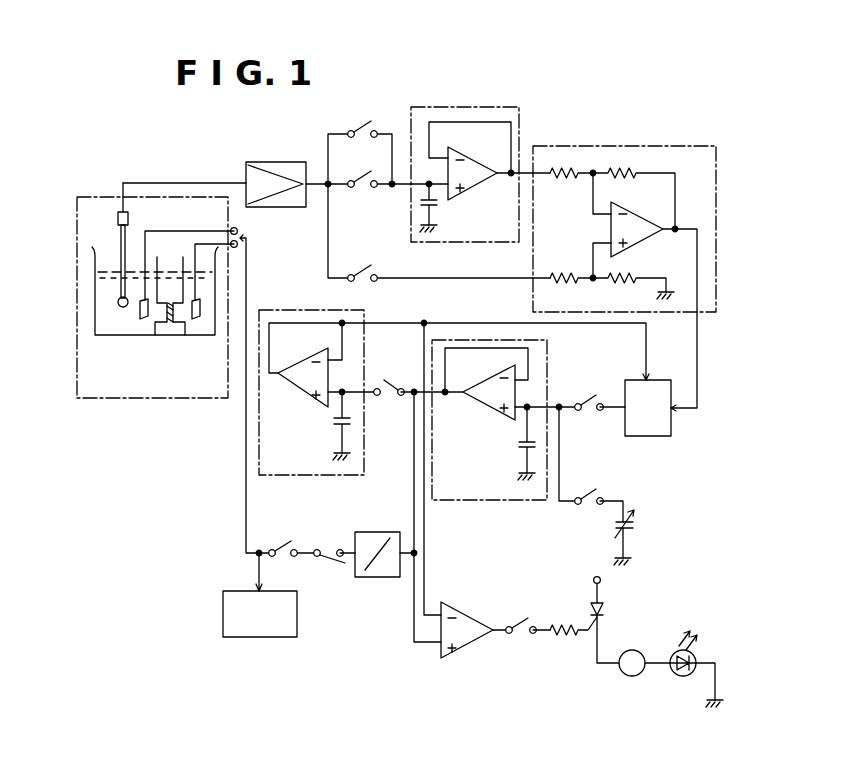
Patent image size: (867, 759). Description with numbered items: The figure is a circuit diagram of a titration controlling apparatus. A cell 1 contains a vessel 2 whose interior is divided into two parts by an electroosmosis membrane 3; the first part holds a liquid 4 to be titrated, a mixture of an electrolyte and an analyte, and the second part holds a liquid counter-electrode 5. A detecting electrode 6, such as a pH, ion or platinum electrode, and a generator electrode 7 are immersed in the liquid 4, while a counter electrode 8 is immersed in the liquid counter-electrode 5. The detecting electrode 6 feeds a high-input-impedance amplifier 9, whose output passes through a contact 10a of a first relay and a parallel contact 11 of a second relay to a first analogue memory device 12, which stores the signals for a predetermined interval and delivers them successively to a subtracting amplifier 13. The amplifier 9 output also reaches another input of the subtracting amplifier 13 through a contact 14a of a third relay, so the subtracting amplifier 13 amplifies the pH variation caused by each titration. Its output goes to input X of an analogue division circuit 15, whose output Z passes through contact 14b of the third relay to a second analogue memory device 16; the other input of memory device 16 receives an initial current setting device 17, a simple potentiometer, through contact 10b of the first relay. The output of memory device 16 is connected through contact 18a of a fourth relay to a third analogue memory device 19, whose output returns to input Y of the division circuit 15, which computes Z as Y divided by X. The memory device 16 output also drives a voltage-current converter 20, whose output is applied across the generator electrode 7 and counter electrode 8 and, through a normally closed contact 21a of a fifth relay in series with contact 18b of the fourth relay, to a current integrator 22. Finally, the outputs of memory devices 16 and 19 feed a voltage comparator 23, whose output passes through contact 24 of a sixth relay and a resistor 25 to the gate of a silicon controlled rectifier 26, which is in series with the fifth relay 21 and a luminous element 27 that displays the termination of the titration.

The cell 1 is at (100, 196).
The vessel 2 is at (77, 311).
The electroosmosis membrane 3 is at (170, 323).
The liquid to be titrated 4 is at (103, 333).
The liquid counter-electrode 5 is at (211, 333).
The detecting electrode 6 is at (118, 237).
The generator electrode 7 is at (144, 320).
The counter electrode 8 is at (196, 320).
The amplifier 9 is at (277, 162).
The contact of first relay 10a is at (367, 123).
The contact of first relay 10b is at (590, 493).
The contact of second relay 11 is at (369, 170).
The first analogue memory device 12 is at (467, 107).
The subtracting amplifier 13 is at (619, 146).
The contact of third relay 14a is at (367, 268).
The contact of third relay 14b is at (590, 397).
The analogue division circuit 15 is at (646, 437).
The second analogue memory device 16 is at (487, 500).
The initial current setting device 17 is at (636, 528).
The contact of fourth relay 18a is at (385, 386).
The contact of fourth relay 18b is at (282, 545).
The third analogue memory device 19 is at (285, 310).
The voltage-current converter 20 is at (356, 576).
The fifth relay 21 is at (632, 676).
The normally closed contact of fifth relay 21a is at (330, 546).
The current integrator 22 is at (255, 637).
The voltage comparator 23 is at (463, 648).
The contact of sixth relay 24 is at (520, 623).
The resistor 25 is at (563, 624).
The silicon controlled rectifier 26 is at (604, 610).
The luminous element 27 is at (684, 676).